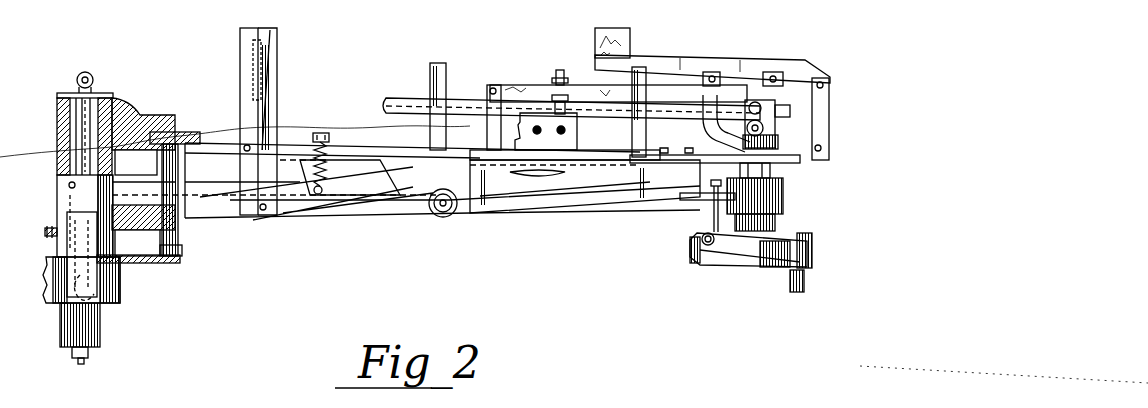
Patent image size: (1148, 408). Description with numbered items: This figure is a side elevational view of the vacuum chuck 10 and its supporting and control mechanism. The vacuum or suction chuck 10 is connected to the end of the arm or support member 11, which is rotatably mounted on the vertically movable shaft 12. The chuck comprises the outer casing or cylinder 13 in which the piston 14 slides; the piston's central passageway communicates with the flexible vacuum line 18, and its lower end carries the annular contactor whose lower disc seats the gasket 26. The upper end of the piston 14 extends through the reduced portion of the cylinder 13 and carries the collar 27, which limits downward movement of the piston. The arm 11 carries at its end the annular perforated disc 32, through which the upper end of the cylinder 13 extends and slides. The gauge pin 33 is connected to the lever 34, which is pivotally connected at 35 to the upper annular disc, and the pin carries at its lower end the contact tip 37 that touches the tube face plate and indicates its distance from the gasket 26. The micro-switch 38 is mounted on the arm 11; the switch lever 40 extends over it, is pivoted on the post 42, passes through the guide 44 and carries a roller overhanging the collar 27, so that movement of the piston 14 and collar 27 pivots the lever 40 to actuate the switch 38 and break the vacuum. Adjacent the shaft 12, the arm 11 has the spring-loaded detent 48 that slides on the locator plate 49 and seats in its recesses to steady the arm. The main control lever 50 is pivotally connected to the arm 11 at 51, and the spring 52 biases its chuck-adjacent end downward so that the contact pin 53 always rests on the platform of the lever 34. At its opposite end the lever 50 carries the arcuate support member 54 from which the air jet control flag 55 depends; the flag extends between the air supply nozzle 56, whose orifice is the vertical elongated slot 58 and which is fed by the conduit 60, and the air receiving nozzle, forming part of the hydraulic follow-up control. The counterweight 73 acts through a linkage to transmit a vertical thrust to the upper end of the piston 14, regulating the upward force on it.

The vacuum chuck 10 is at (695, 278).
The arm or support member 11 is at (380, 240).
The vertically movable shaft 12 is at (100, 330).
The outer casing or cylinder 13 is at (784, 198).
The piston 14 is at (775, 226).
The flexible vacuum line 18 is at (420, 95).
The gasket 26 is at (740, 266).
The collar 27 is at (785, 128).
The annular perforated disc 32 is at (785, 163).
The gauge pin 33 is at (805, 268).
The lever 34 is at (772, 266).
The pivot connection 35 is at (700, 240).
The contact tip 37 is at (800, 290).
The micro-switch 38 is at (578, 130).
The switch lever 40 is at (584, 90).
The post 42 is at (458, 130).
The guide 44 is at (647, 132).
The spring-loaded detent 48 is at (180, 246).
The locator plate 49 is at (180, 260).
The main control lever 50 is at (575, 212).
The pivot connection 51 is at (443, 207).
The spring 52 is at (326, 170).
The contact pin 53 is at (712, 212).
The arcuate support member 54 is at (171, 146).
The air jet control flag 55 is at (105, 228).
The air supply nozzle 56 is at (92, 280).
The elongated slot 58 is at (96, 298).
The conduit 60 is at (57, 232).
The counterweight 73 is at (610, 30).